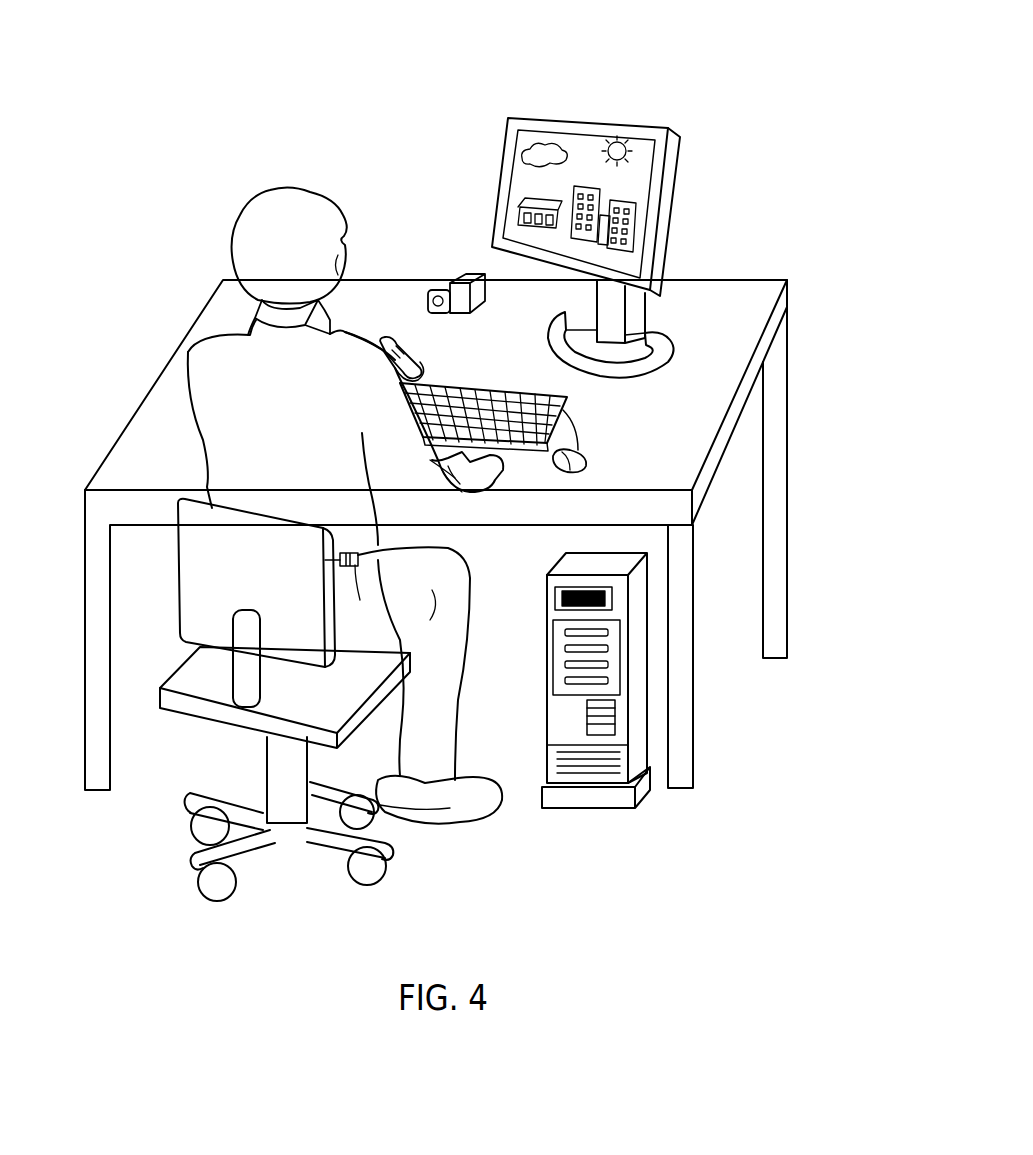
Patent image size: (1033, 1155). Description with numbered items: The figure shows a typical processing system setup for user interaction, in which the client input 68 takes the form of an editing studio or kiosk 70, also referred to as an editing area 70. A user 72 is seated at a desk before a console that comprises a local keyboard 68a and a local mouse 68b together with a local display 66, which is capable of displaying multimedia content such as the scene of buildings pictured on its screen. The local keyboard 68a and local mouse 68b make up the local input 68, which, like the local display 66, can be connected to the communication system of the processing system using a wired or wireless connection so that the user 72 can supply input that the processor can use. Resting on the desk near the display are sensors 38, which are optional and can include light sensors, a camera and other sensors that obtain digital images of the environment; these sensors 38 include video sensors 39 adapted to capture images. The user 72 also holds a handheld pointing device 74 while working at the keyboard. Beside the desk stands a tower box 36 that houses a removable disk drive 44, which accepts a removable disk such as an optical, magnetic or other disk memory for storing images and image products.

The editing studio or kiosk 70 is at (757, 116).
The local display 66 is at (604, 107).
The local input controls 68 is at (585, 321).
The local keyboard 68a is at (578, 400).
The local mouse 68b is at (621, 441).
The user 72 is at (299, 417).
The pointing device 74 is at (388, 345).
The sensors 38 is at (446, 253).
The video sensors 39 is at (437, 290).
The removable disk drive 44 is at (529, 597).
The tower box 36 is at (548, 736).